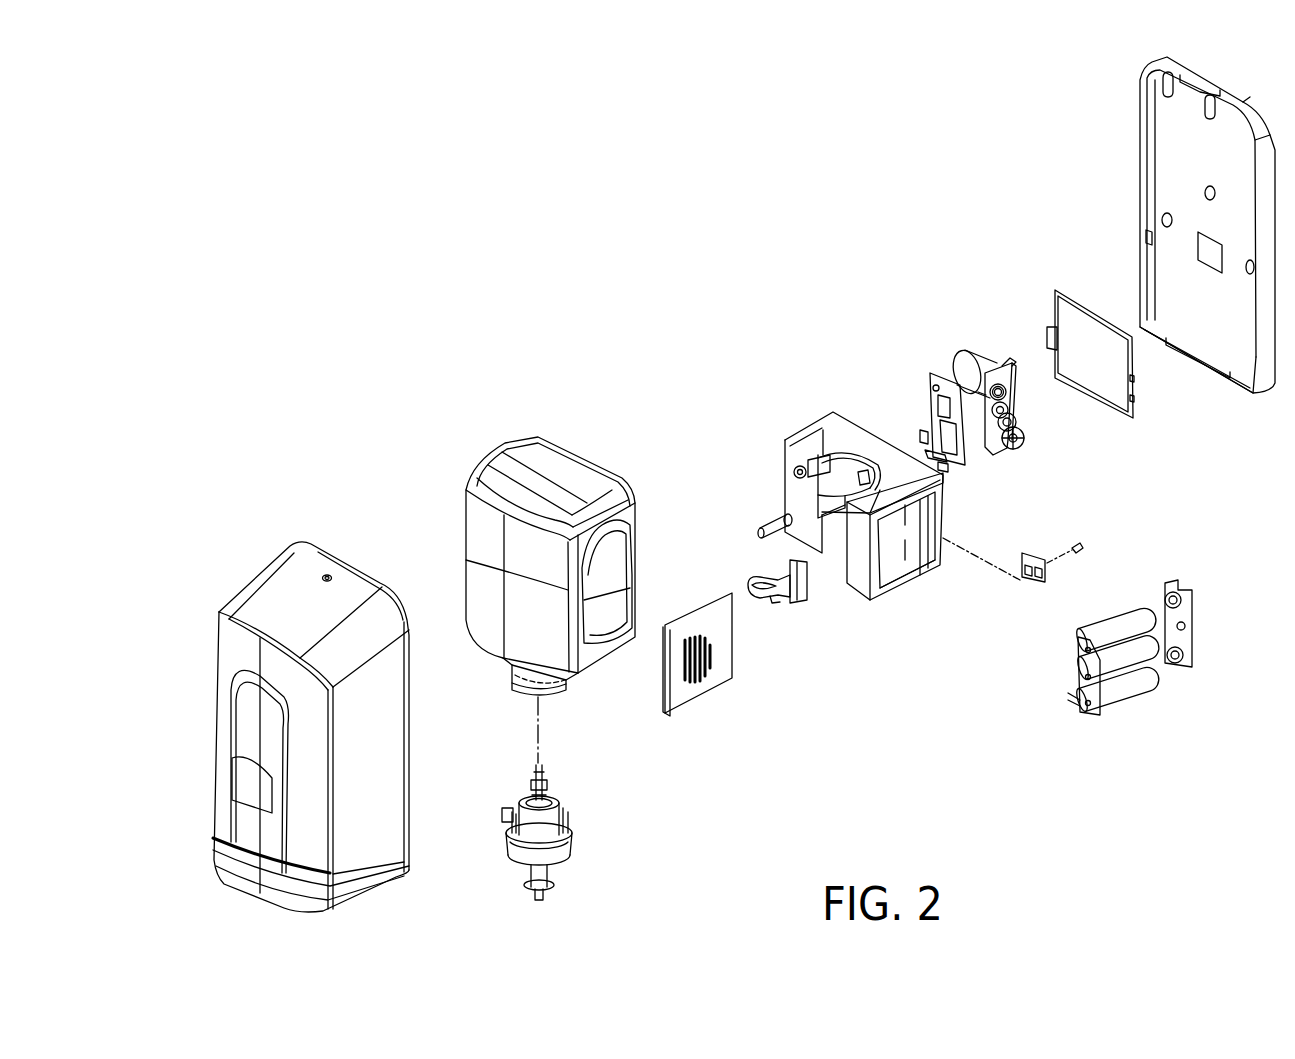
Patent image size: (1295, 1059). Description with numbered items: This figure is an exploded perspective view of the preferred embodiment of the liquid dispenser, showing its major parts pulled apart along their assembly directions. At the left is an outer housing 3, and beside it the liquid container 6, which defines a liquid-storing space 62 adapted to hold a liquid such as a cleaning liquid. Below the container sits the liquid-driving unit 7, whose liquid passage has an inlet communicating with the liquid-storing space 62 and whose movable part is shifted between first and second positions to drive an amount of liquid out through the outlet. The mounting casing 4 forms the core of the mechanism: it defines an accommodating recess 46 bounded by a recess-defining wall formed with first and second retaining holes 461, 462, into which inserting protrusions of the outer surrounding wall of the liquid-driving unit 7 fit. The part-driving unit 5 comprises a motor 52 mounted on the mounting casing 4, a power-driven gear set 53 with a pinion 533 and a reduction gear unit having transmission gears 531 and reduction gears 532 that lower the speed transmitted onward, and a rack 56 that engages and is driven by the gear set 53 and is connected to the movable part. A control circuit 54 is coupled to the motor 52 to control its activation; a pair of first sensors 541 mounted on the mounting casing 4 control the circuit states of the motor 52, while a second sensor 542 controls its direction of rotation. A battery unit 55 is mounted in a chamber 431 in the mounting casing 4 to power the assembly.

The housing 3 is at (256, 562).
The mounting casing 4 is at (792, 417).
The accommodating recess 46 is at (843, 462).
The first retaining hole 461 is at (795, 465).
The second retaining hole 462 is at (863, 478).
The chamber 431 is at (903, 568).
The part-driving unit 5 is at (1037, 460).
The motor 52 is at (980, 356).
The gear set 53 is at (1032, 426).
The transmission gears 531 is at (1005, 396).
The reduction gears 532 is at (980, 392).
The pinion 533 is at (1025, 440).
The control circuit 54 is at (912, 396).
The first sensors 541 is at (917, 443).
The second sensor 542 is at (1032, 573).
The battery unit 55 is at (1132, 712).
The rack 56 is at (777, 622).
The liquid container 6 is at (495, 433).
The liquid-storing space 62 is at (485, 542).
The liquid-driving unit 7 is at (588, 837).